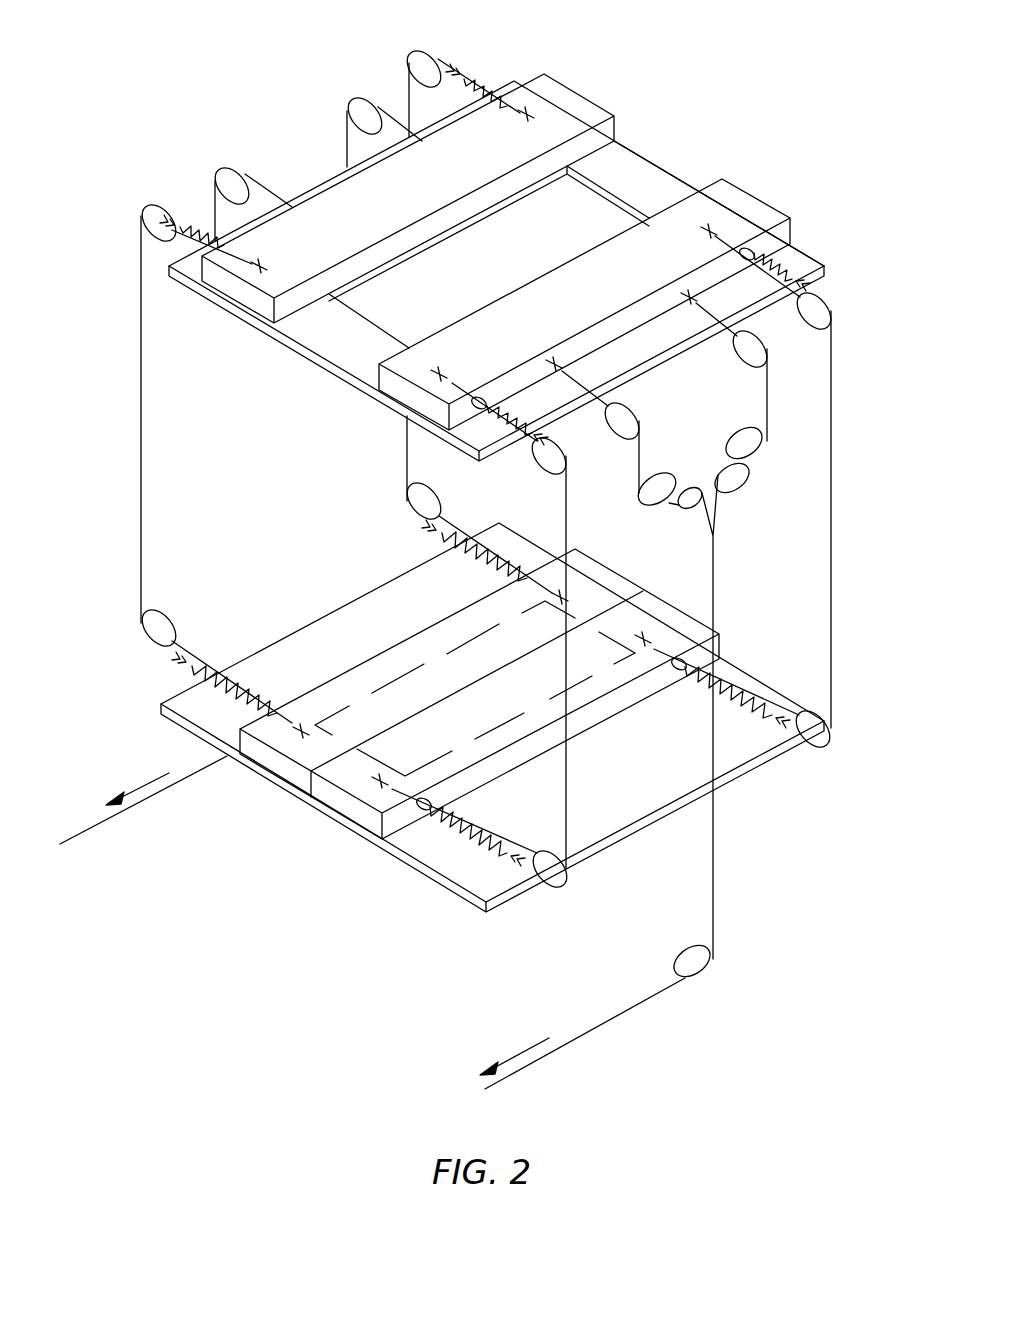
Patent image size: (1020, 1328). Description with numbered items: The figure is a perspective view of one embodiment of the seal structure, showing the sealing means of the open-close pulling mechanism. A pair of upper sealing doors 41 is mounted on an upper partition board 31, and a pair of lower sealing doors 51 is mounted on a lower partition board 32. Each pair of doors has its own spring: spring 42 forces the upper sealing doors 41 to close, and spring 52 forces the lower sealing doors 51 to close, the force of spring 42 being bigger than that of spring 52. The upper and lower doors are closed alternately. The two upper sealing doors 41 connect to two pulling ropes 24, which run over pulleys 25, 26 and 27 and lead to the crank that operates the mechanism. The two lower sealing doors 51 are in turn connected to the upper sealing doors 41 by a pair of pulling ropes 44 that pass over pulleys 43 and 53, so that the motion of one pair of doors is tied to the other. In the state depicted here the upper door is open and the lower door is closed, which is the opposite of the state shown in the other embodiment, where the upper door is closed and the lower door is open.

The pulling ropes 24 is at (102, 823).
The pulley 25 is at (693, 960).
The pulley 26 is at (733, 480).
The pulley 27 is at (747, 443).
The upper partition board 31 is at (630, 163).
The lower partition board 32 is at (197, 718).
The upper sealing doors 41 is at (730, 187).
The spring 42 is at (772, 252).
The pulley 43 is at (817, 308).
The pulling ropes 44 is at (830, 457).
The lower sealing doors 51 is at (375, 777).
The spring 52 is at (468, 842).
The pulley 53 is at (537, 872).